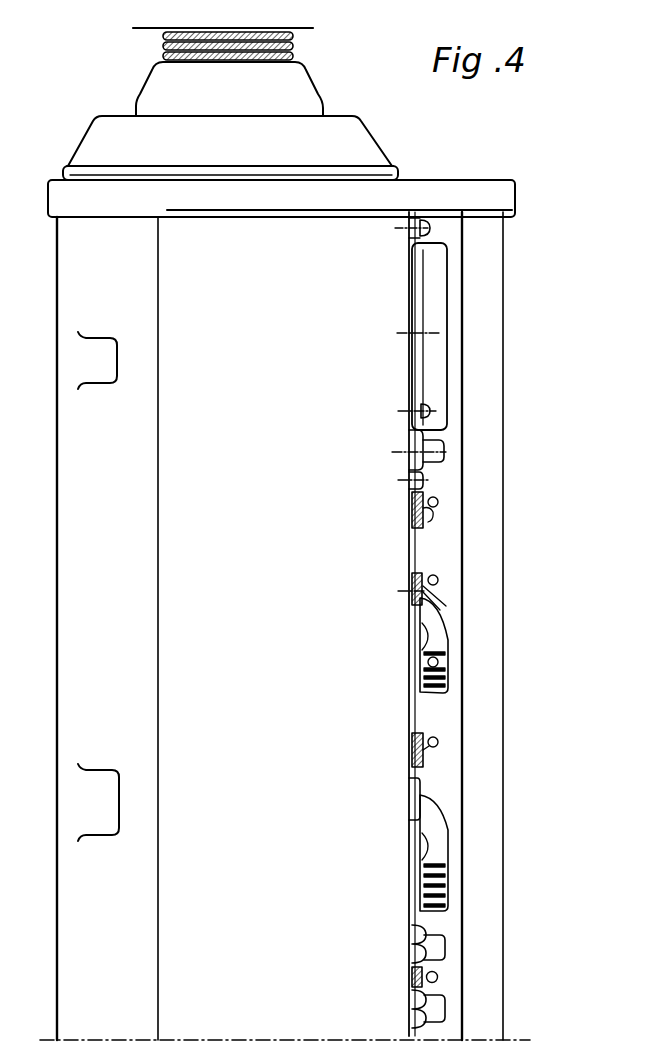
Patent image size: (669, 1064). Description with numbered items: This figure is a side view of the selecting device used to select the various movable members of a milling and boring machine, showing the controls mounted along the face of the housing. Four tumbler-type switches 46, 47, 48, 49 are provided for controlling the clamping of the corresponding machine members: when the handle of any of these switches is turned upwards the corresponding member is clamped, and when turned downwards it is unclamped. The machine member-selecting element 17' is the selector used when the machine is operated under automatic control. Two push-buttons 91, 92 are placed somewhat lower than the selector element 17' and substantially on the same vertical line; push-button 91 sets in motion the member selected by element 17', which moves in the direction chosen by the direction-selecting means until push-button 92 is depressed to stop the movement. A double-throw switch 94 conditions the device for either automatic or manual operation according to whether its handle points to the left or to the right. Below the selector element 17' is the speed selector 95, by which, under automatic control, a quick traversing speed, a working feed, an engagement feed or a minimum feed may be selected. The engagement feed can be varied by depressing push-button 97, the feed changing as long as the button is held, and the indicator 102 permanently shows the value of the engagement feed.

The indicator 102 is at (440, 282).
The push-button 97 is at (441, 447).
The switch 46 is at (440, 500).
The switch 47 is at (440, 583).
The machine member-selecting element 17' is at (492, 645).
The switch 48 is at (440, 665).
The switch 49 is at (440, 742).
The speed selector 95 is at (438, 848).
The push-button 91 is at (440, 946).
The double-throw switch 94 is at (440, 977).
The push-button 92 is at (440, 1010).